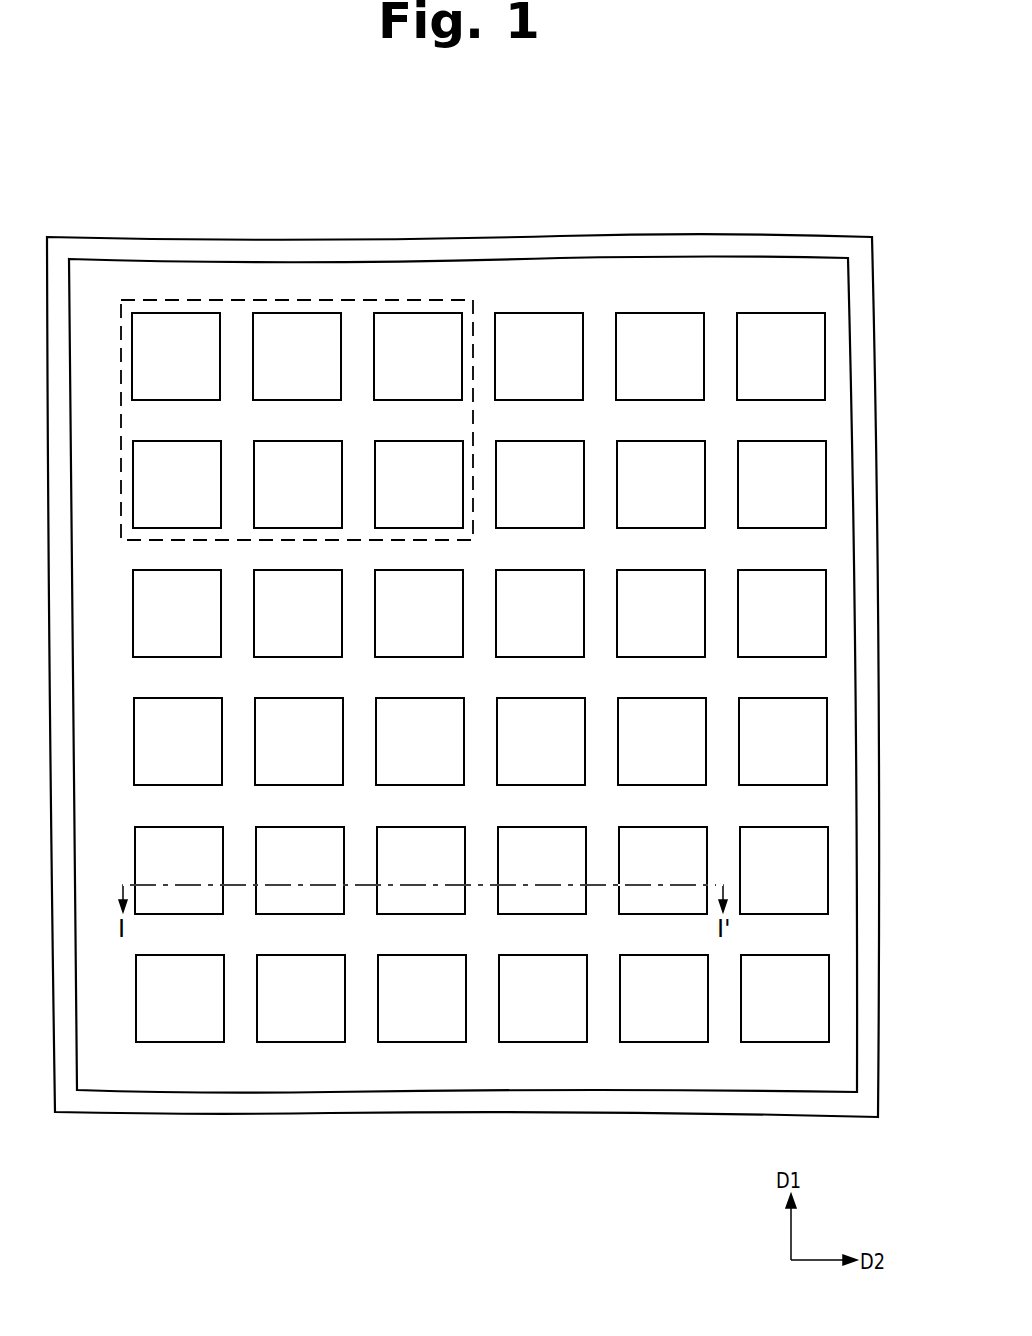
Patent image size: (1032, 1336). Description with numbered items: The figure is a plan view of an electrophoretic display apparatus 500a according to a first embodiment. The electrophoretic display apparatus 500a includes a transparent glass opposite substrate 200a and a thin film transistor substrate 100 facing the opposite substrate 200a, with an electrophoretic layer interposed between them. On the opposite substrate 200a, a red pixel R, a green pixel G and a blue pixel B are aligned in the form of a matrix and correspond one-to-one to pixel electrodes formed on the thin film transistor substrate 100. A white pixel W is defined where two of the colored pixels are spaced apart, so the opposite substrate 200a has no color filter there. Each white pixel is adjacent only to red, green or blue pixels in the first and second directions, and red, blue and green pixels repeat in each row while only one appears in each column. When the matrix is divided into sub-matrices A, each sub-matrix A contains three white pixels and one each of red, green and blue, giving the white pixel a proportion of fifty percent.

The thin film transistor substrate 100 is at (694, 250).
The opposite substrate 200a is at (785, 275).
The electrophoretic display apparatus 500a is at (822, 173).
The sub-matrix A is at (232, 300).